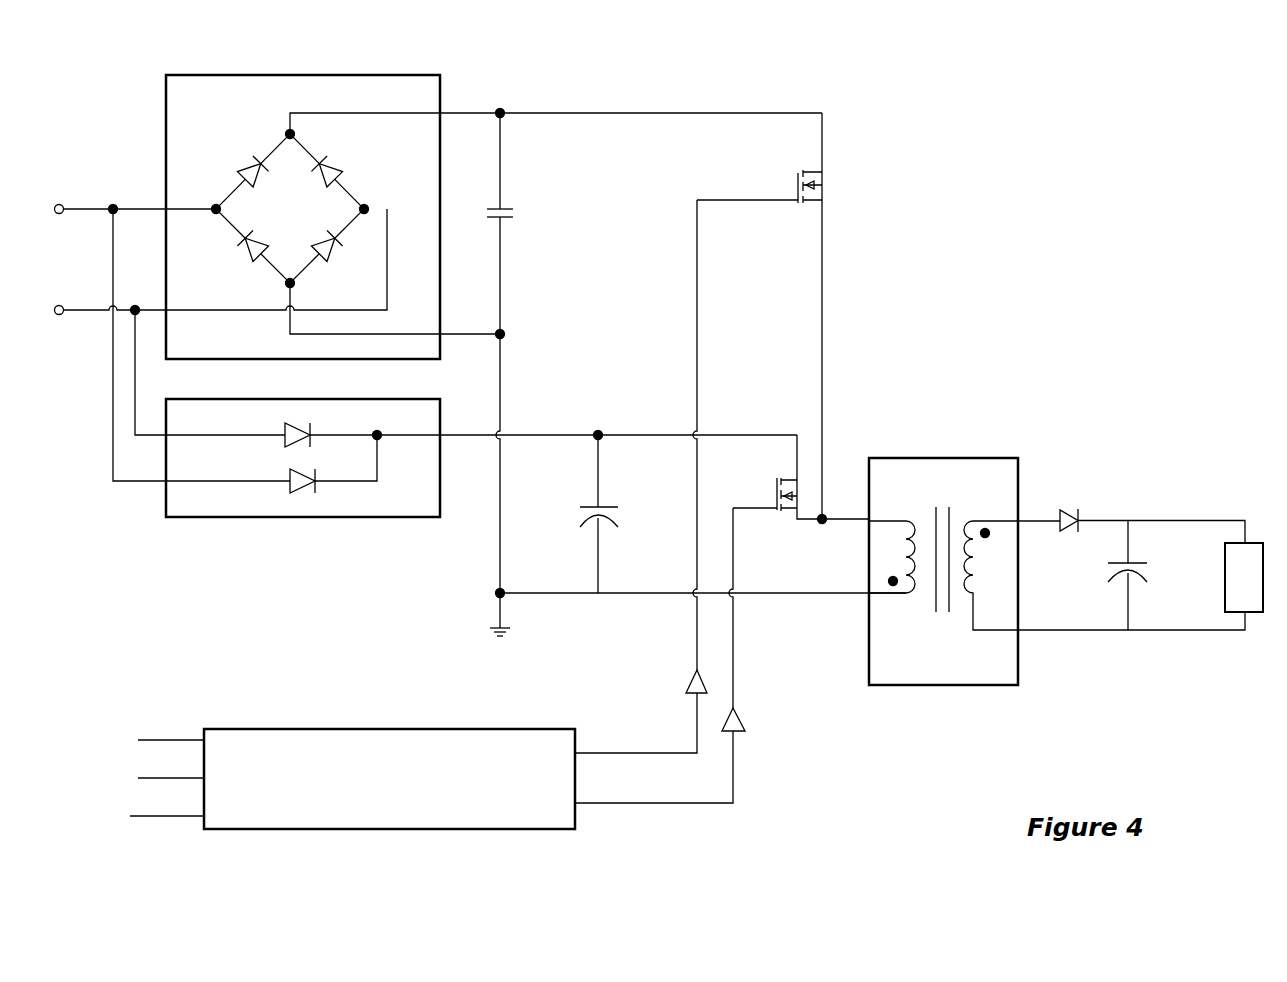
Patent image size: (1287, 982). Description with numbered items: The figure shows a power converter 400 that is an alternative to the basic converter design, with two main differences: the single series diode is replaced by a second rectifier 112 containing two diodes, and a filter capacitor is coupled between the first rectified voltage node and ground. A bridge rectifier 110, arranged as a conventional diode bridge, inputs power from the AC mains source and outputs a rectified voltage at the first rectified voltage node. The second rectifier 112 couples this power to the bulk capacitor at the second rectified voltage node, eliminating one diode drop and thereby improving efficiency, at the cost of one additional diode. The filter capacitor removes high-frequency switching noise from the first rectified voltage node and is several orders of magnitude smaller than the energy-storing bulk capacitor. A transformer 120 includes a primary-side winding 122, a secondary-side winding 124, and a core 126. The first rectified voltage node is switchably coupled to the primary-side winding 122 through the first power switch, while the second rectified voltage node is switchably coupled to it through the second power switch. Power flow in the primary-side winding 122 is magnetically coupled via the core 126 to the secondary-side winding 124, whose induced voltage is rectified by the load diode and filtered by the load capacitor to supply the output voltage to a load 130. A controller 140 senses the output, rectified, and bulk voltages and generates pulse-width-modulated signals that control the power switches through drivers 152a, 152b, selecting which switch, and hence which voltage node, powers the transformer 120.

The power converter 400 is at (1140, 92).
The bridge rectifier 110 is at (494, 200).
The second rectifier 112 is at (481, 443).
The transformer 120 is at (943, 557).
The primary-side winding 122 is at (892, 542).
The secondary-side winding 124 is at (991, 560).
The core 126 is at (942, 577).
The load 130 is at (1256, 560).
The controller 140 is at (389, 766).
The driver 152a is at (674, 673).
The driver 152b is at (756, 713).